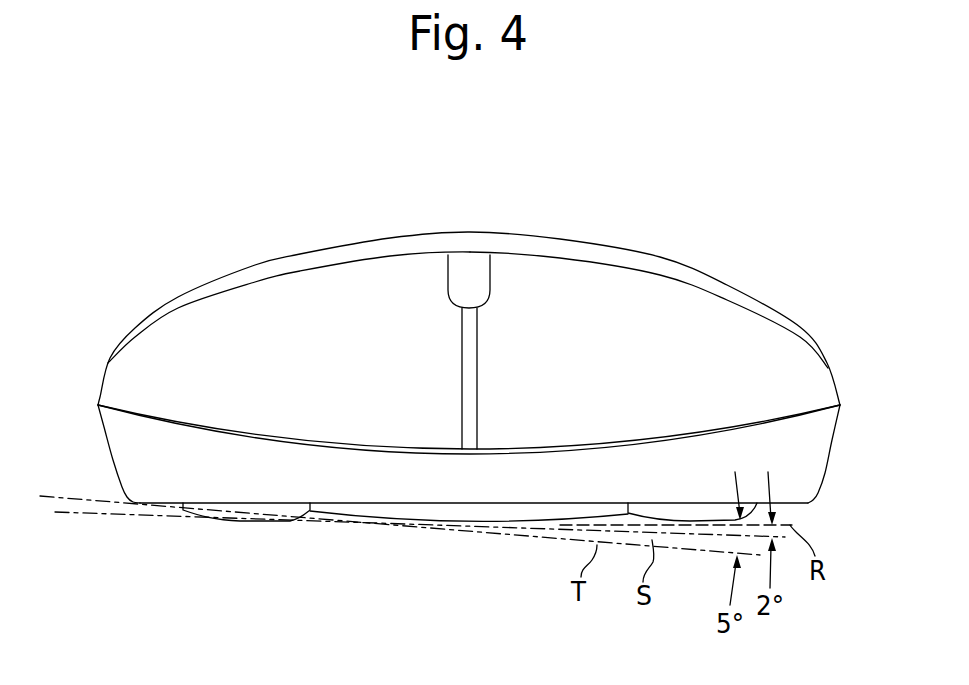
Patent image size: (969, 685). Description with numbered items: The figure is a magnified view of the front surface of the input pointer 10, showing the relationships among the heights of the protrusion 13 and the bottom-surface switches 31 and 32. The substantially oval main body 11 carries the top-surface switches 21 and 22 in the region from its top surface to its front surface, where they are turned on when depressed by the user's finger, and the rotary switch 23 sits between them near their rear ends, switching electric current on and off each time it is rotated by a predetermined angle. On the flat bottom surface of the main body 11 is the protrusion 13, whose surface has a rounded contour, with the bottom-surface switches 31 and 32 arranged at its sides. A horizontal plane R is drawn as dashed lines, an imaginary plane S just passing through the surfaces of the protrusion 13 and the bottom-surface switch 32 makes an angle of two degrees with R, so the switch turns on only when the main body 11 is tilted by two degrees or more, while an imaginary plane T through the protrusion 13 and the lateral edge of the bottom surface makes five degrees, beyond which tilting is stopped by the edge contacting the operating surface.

The input pointer 10 is at (778, 222).
The main body 11 is at (647, 254).
The protrusion 13 is at (462, 521).
The top-surface switch 21 is at (792, 343).
The top-surface switch 22 is at (190, 330).
The rotary switch 23 is at (468, 268).
The bottom-surface switch 31 is at (698, 509).
The bottom-surface switch 32 is at (252, 508).